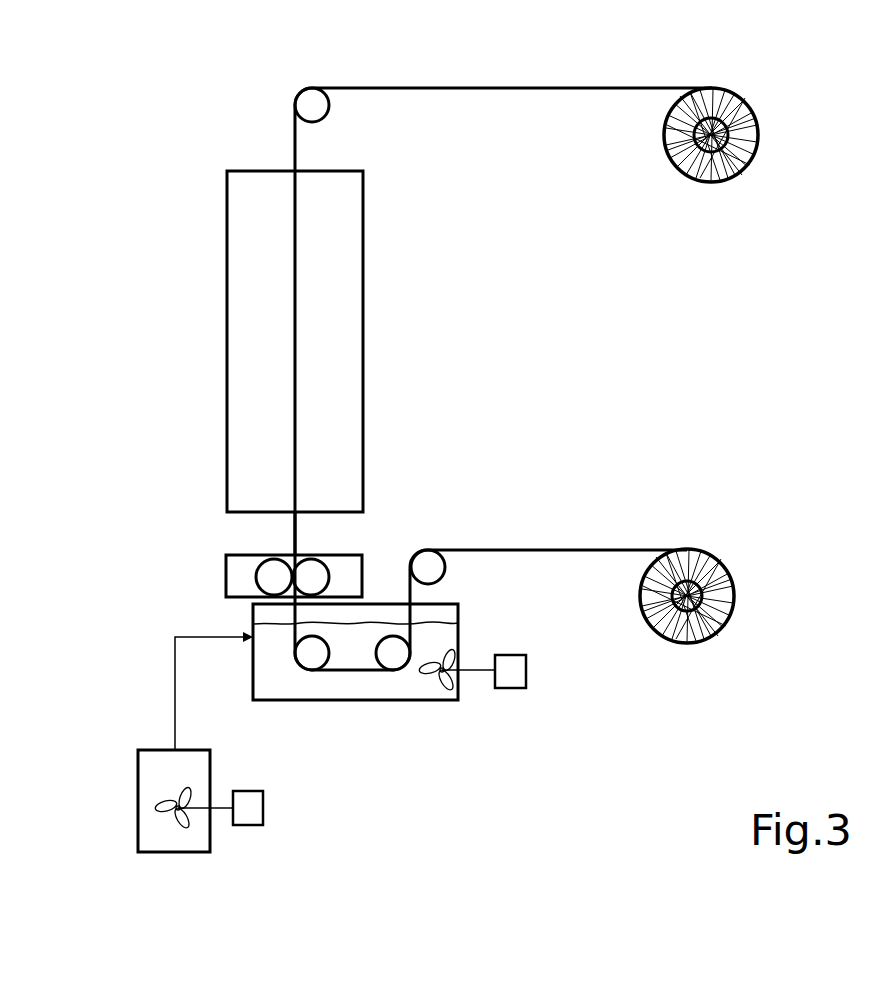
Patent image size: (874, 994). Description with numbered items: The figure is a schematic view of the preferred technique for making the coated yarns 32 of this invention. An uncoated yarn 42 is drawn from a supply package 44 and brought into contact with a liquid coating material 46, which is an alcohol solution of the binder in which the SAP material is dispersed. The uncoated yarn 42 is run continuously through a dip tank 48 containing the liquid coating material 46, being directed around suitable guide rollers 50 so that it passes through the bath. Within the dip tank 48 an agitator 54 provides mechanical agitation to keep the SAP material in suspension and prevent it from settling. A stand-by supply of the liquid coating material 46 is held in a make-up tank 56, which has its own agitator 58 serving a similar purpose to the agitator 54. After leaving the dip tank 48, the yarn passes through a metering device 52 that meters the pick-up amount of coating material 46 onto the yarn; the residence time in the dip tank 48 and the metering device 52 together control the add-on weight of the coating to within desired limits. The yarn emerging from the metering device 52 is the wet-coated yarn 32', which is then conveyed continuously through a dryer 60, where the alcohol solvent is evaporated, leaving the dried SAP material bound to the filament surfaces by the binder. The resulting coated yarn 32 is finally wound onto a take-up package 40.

The coated yarn 32 is at (503, 348).
The wet-coated yarn 32' is at (240, 533).
The take-up package 40 is at (748, 170).
The uncoated yarn 42 is at (558, 552).
The supply package 44 is at (730, 556).
The liquid coating material 46 is at (408, 690).
The dip tank 48 is at (322, 700).
The guide rollers 50 is at (434, 562).
The metering device 52 is at (229, 568).
The agitator 54 is at (508, 656).
The make-up tank 56 is at (138, 794).
The agitator 58 is at (255, 826).
The dryer 60 is at (363, 298).